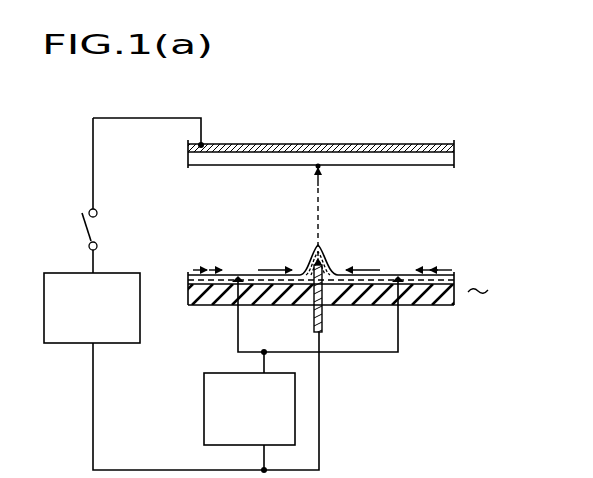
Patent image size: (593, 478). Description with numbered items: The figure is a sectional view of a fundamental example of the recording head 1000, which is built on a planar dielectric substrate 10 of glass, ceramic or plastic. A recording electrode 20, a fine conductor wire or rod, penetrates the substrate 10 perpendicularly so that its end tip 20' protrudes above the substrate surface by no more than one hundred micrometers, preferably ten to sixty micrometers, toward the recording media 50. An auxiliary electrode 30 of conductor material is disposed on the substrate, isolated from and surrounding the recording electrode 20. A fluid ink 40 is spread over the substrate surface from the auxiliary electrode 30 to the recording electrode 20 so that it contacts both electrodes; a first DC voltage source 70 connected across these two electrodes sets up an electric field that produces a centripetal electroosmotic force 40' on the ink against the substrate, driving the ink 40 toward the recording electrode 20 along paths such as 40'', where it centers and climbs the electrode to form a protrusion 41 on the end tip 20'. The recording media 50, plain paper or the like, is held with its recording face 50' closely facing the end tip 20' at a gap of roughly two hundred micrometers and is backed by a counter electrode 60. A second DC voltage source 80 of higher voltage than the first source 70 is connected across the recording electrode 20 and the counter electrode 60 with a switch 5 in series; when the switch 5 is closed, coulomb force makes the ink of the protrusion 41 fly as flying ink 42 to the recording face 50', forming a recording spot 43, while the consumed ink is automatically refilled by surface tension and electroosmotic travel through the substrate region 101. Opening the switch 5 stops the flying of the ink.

The switch 5 is at (98, 217).
The dielectric substrate 10 is at (188, 305).
The recording electrode 20 is at (337, 298).
The recording electrode end tip 20' is at (353, 252).
The auxiliary electrode 30 is at (234, 305).
The fluid ink 40 is at (321, 258).
The centripetal electroosmotic force 40' is at (277, 252).
The ink flow 40'' is at (202, 252).
The protrusion 41 is at (325, 256).
The flying fluid ink 42 is at (322, 193).
The recording spot 43 is at (314, 169).
The recording media 50 is at (328, 173).
The recording face 50' is at (361, 185).
The counter electrode 60 is at (430, 143).
The first DC voltage source 70 is at (204, 397).
The second DC voltage source 80 is at (44, 305).
The through hole 101 is at (269, 305).
The recording head 1000 is at (543, 304).